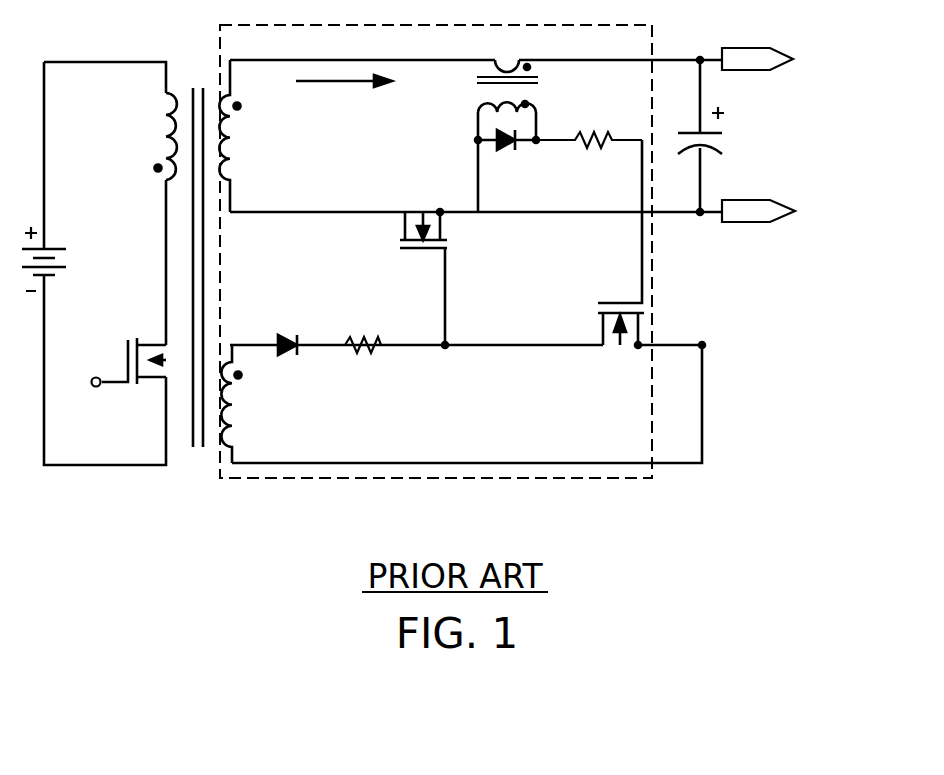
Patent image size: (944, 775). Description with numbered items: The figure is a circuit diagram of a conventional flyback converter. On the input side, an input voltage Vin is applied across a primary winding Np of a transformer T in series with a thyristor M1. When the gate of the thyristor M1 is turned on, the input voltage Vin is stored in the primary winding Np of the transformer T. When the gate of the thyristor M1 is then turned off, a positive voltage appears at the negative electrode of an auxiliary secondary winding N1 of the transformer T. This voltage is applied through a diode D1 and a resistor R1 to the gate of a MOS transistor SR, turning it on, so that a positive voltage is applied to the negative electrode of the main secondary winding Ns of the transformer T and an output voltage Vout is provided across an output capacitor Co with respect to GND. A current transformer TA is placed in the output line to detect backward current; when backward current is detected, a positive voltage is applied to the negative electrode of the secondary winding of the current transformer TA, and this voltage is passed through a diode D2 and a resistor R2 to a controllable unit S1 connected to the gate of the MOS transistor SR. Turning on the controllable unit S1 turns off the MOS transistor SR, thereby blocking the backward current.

The transformer T is at (199, 235).
The primary winding Np is at (145, 136).
The main secondary winding Ns is at (253, 136).
The auxiliary secondary winding N1 is at (255, 404).
The input voltage Vin is at (73, 259).
The thyristor M1 is at (122, 381).
The MOS transistor SR is at (423, 257).
The diode D1 is at (299, 326).
The resistor R1 is at (365, 325).
The current transformer TA is at (512, 118).
The diode D2 is at (507, 157).
The resistor R2 is at (589, 120).
The controllable unit S1 is at (597, 244).
The output capacitor Co is at (724, 136).
The output voltage Vout is at (802, 59).
The ground GND is at (800, 211).